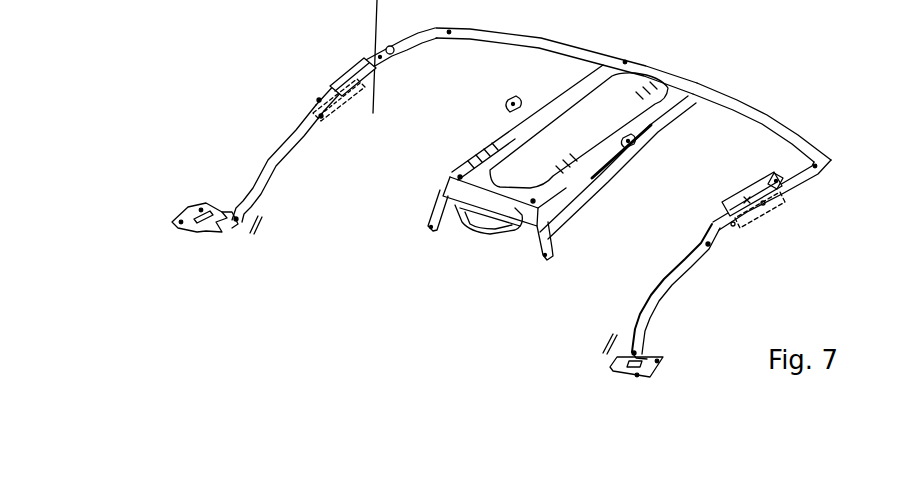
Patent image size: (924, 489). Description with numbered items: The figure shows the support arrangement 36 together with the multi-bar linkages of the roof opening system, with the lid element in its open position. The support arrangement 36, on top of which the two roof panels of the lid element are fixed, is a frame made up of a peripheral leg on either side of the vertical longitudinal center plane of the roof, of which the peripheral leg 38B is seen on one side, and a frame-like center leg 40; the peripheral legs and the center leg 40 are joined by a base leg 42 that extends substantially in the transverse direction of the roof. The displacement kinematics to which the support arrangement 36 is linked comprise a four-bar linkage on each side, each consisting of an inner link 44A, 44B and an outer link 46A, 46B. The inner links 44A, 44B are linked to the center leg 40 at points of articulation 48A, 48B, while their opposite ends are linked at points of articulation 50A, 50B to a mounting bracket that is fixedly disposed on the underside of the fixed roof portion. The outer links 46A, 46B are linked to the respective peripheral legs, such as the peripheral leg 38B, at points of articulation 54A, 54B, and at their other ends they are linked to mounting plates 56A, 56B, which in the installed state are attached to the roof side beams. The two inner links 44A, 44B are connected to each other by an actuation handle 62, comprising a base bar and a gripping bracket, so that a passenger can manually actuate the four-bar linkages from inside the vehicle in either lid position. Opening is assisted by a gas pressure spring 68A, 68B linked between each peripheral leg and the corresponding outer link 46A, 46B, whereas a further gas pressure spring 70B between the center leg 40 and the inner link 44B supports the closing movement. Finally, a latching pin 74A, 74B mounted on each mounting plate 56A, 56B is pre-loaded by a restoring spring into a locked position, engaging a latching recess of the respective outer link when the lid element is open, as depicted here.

The support arrangement 36 is at (795, 123).
The peripheral leg 38B is at (780, 205).
The center leg 40 is at (652, 76).
The base leg 42 is at (567, 40).
The inner link 44A is at (480, 143).
The inner link 44B is at (583, 195).
The outer link 46A is at (268, 165).
The outer link 46B is at (638, 311).
The point of articulation 48A is at (512, 102).
The point of articulation 48B is at (636, 141).
The point of articulation 50A is at (424, 226).
The point of articulation 50B is at (548, 261).
The point of articulation 54A is at (318, 98).
The point of articulation 54B is at (714, 232).
The mounting plate 56A is at (191, 216).
The mounting plate 56B is at (655, 355).
The actuation handle 62 is at (463, 239).
The gas pressure spring 68A is at (376, 90).
The gas pressure spring 68B is at (760, 184).
The gas pressure spring 70B is at (613, 162).
The latching pin 74A is at (238, 220).
The latching pin 74B is at (627, 352).